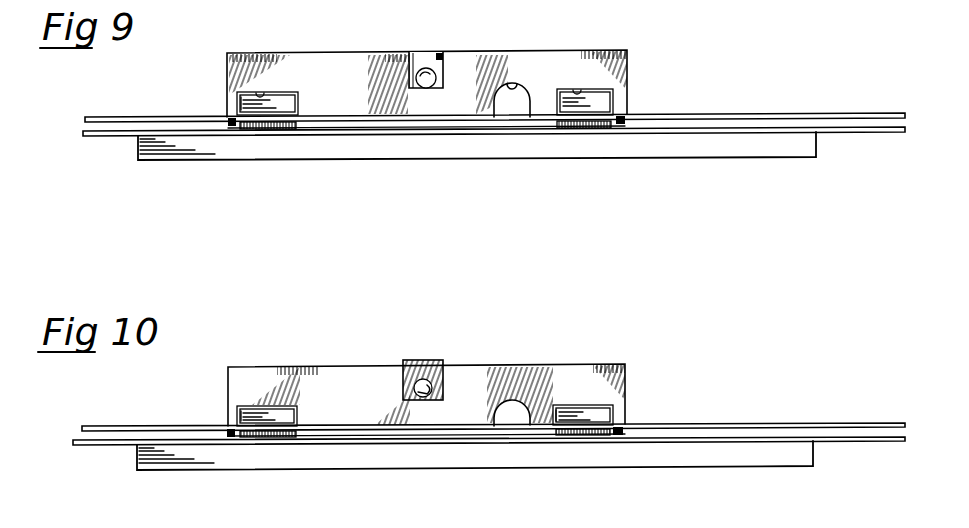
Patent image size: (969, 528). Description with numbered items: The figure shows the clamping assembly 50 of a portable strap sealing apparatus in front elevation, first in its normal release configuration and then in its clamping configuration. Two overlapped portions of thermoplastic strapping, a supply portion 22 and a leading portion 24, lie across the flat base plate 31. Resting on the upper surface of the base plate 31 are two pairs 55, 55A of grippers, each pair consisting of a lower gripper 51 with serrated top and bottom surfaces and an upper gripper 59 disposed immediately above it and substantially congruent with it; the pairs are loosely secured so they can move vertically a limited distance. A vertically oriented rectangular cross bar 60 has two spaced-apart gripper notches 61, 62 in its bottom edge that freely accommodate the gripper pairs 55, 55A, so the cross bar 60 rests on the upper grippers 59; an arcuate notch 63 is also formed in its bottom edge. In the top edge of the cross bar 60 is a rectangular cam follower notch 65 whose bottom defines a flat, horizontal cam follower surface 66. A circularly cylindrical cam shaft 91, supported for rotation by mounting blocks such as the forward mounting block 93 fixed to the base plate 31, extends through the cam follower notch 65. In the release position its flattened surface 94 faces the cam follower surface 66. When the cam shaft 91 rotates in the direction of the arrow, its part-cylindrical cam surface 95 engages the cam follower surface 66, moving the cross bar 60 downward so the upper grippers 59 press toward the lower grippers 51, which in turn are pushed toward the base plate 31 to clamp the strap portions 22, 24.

In FIG. 9, the strap portion 22 is at (840, 110).
In FIG. 10, the strap portion 22 is at (493, 427).
In FIG. 9, the strap portion 24 is at (99, 141).
In FIG. 10, the strap portion 24 is at (489, 441).
In FIG. 9, the base plate 31 is at (455, 148).
In FIG. 10, the base plate 31 is at (197, 456).
In FIG. 9, the clamping assembly 50 is at (592, 16).
In FIG. 9, the lower gripper 51 is at (249, 131).
In FIG. 10, the lower gripper 51 is at (265, 436).
In FIG. 9, the pair of grippers 55 is at (300, 95).
In FIG. 10, the pair of grippers 55 is at (267, 416).
In FIG. 9, the pair of grippers 55A is at (630, 86).
In FIG. 10, the pair of grippers 55A is at (583, 415).
In FIG. 9, the upper gripper 59 is at (237, 105).
In FIG. 10, the upper gripper 59 is at (237, 417).
In FIG. 9, the cross bar 60 is at (325, 60).
In FIG. 10, the cross bar 60 is at (323, 372).
In FIG. 9, the gripper notch 61 is at (576, 94).
In FIG. 9, the gripper notch 62 is at (261, 92).
In FIG. 9, the arcuate notch 63 is at (514, 84).
In FIG. 10, the arcuate notch 63 is at (512, 413).
In FIG. 9, the cam follower notch 65 is at (438, 56).
In FIG. 9, the cam follower surface 66 is at (427, 87).
In FIG. 10, the cam follower surface 66 is at (440, 396).
In FIG. 10, the cam shaft 91 is at (424, 380).
In FIG. 9, the forward mounting block 93 is at (420, 54).
In FIG. 10, the flattened surface 94 is at (436, 385).
In FIG. 10, the cam surface 95 is at (412, 388).